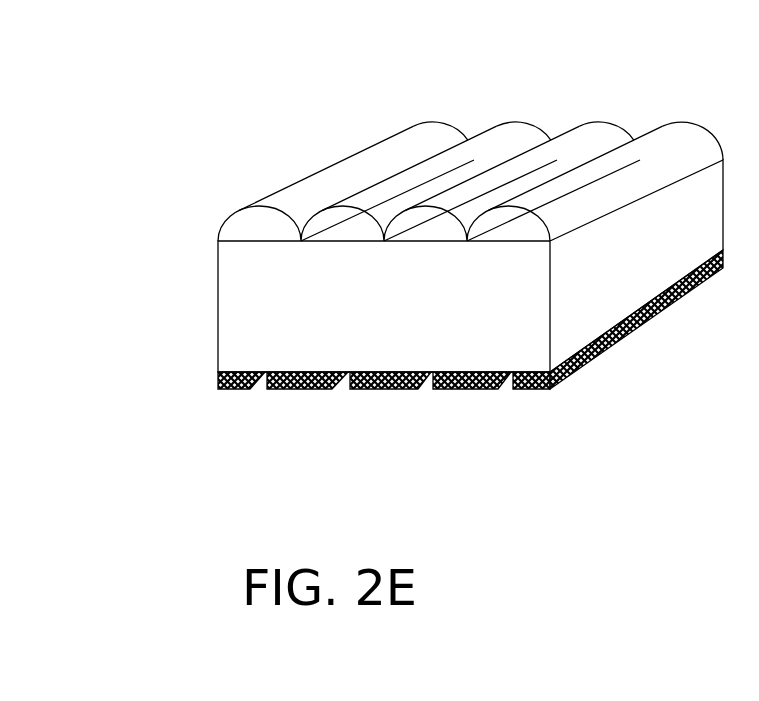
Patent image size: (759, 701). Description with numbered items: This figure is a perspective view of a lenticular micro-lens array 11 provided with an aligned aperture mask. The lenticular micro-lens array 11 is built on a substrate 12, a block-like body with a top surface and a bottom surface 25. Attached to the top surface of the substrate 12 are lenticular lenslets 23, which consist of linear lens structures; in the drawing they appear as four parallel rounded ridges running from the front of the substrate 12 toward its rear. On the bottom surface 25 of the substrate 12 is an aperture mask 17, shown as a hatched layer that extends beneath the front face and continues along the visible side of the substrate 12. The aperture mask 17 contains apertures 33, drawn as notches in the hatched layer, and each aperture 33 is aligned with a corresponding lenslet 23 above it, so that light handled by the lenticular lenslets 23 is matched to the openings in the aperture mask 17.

The lenticular micro-lens array 11 is at (188, 249).
The substrate 12 is at (218, 303).
The aperture mask 17 is at (217, 378).
The lenticular lenslets 23 is at (515, 120).
The bottom surface 25 is at (592, 358).
The apertures 33 is at (502, 385).